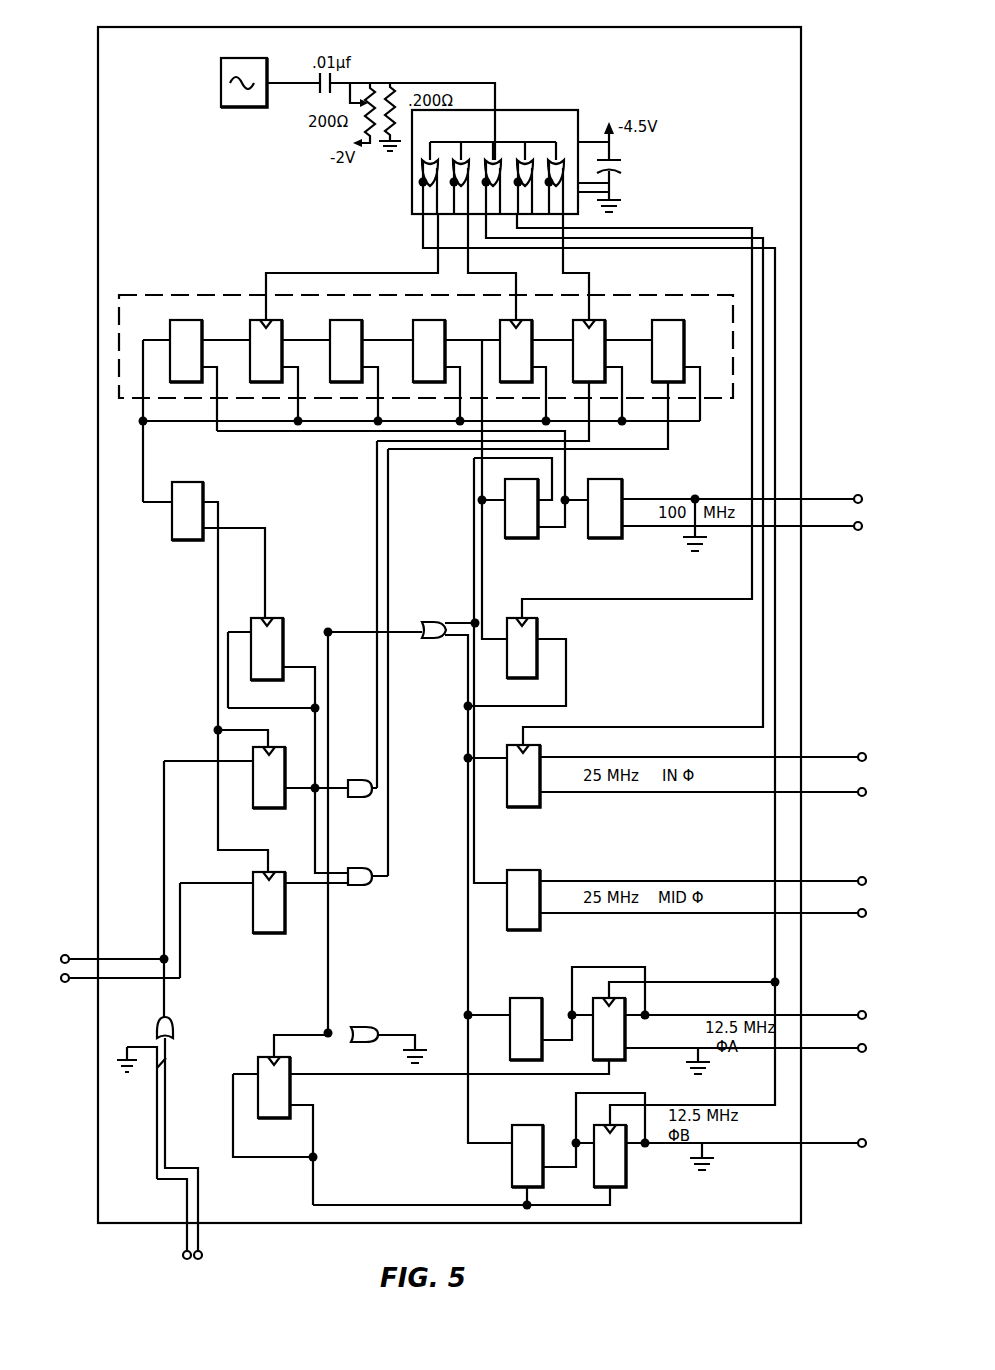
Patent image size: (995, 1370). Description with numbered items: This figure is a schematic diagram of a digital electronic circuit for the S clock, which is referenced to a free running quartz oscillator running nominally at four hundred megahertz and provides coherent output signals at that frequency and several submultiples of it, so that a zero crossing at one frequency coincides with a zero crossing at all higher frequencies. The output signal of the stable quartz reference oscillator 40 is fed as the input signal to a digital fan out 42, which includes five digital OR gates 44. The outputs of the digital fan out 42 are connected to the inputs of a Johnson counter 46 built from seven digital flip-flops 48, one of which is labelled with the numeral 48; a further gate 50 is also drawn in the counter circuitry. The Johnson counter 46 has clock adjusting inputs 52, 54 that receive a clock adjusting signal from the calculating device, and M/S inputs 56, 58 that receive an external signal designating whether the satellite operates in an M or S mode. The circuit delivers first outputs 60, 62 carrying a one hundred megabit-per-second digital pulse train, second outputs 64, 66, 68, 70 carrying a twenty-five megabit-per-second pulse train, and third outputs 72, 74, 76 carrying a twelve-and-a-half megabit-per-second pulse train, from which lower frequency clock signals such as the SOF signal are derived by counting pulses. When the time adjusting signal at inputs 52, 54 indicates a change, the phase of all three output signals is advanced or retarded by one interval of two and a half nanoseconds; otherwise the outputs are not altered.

The stable quartz reference oscillator 40 is at (221, 83).
The digital fan out 42 is at (474, 132).
The digital OR gate 44 is at (421, 174).
The Johnson counter 46 is at (479, 363).
The digital flip-flop 48 is at (392, 318).
The gate 50 is at (430, 623).
The clock adjusting input 52 is at (65, 955).
The clock adjusting input 54 is at (65, 982).
The M/S input 56 is at (183, 1258).
The M/S input 58 is at (202, 1258).
The first output 60 is at (866, 490).
The first output 62 is at (861, 531).
The second output 64 is at (870, 746).
The second output 66 is at (865, 797).
The second output 68 is at (865, 878).
The second output 70 is at (865, 918).
The third output 72 is at (865, 1012).
The third output 74 is at (865, 1053).
The third output 76 is at (865, 1140).